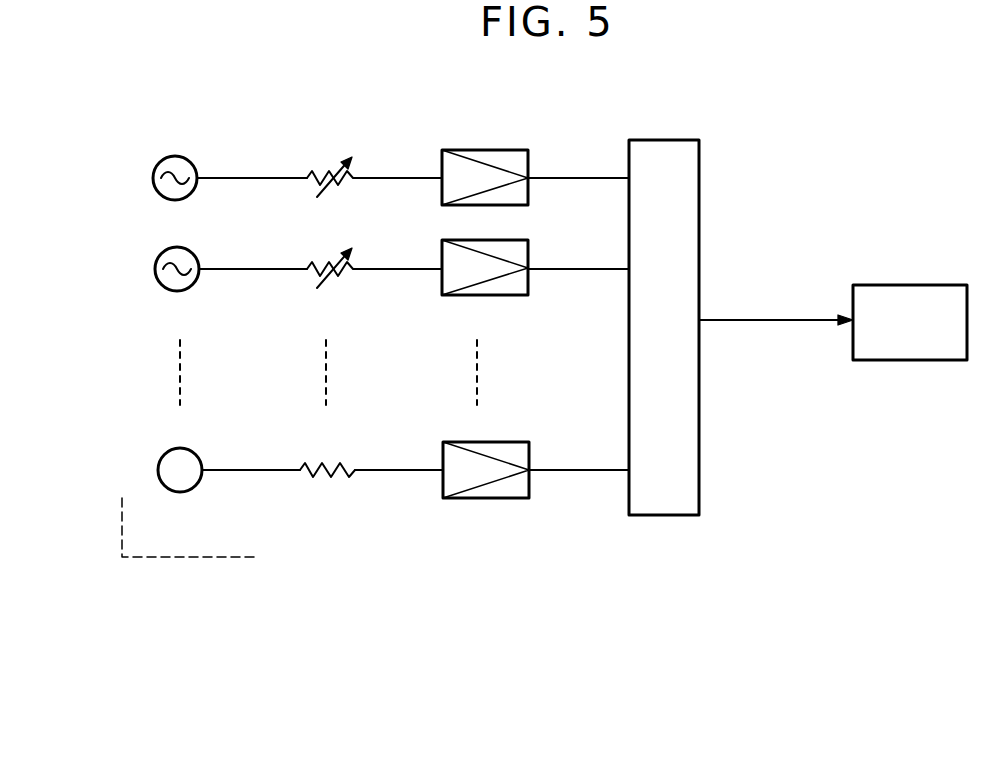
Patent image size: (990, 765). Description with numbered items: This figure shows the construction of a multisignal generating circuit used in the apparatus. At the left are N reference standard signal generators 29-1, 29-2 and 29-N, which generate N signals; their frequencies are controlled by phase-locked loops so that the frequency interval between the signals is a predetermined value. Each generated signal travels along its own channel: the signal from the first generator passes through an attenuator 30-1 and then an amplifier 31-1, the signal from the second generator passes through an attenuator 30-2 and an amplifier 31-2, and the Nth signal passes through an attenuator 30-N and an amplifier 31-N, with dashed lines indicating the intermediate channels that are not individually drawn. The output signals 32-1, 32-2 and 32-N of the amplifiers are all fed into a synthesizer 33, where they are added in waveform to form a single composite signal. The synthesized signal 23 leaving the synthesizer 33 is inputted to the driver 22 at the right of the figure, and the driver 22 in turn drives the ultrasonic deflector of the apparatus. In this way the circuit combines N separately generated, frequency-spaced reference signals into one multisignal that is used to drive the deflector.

The reference standard signal generator 29-1 is at (183, 160).
The reference standard signal generator 29-2 is at (186, 250).
The reference standard signal generator 29-N is at (188, 449).
The attenuator 30-1 is at (341, 159).
The attenuator 30-2 is at (337, 254).
The attenuator 30-N is at (331, 446).
The amplifier 31-1 is at (472, 135).
The amplifier 31-2 is at (468, 240).
The amplifier 31-N is at (475, 442).
The output signal of amplifier 32-1 is at (570, 176).
The output signal of amplifier 32-2 is at (572, 267).
The output signal of amplifier 32-N is at (566, 469).
The synthesizer 33 is at (675, 140).
The synthesized signal 23 is at (766, 319).
The driver 22 is at (918, 285).